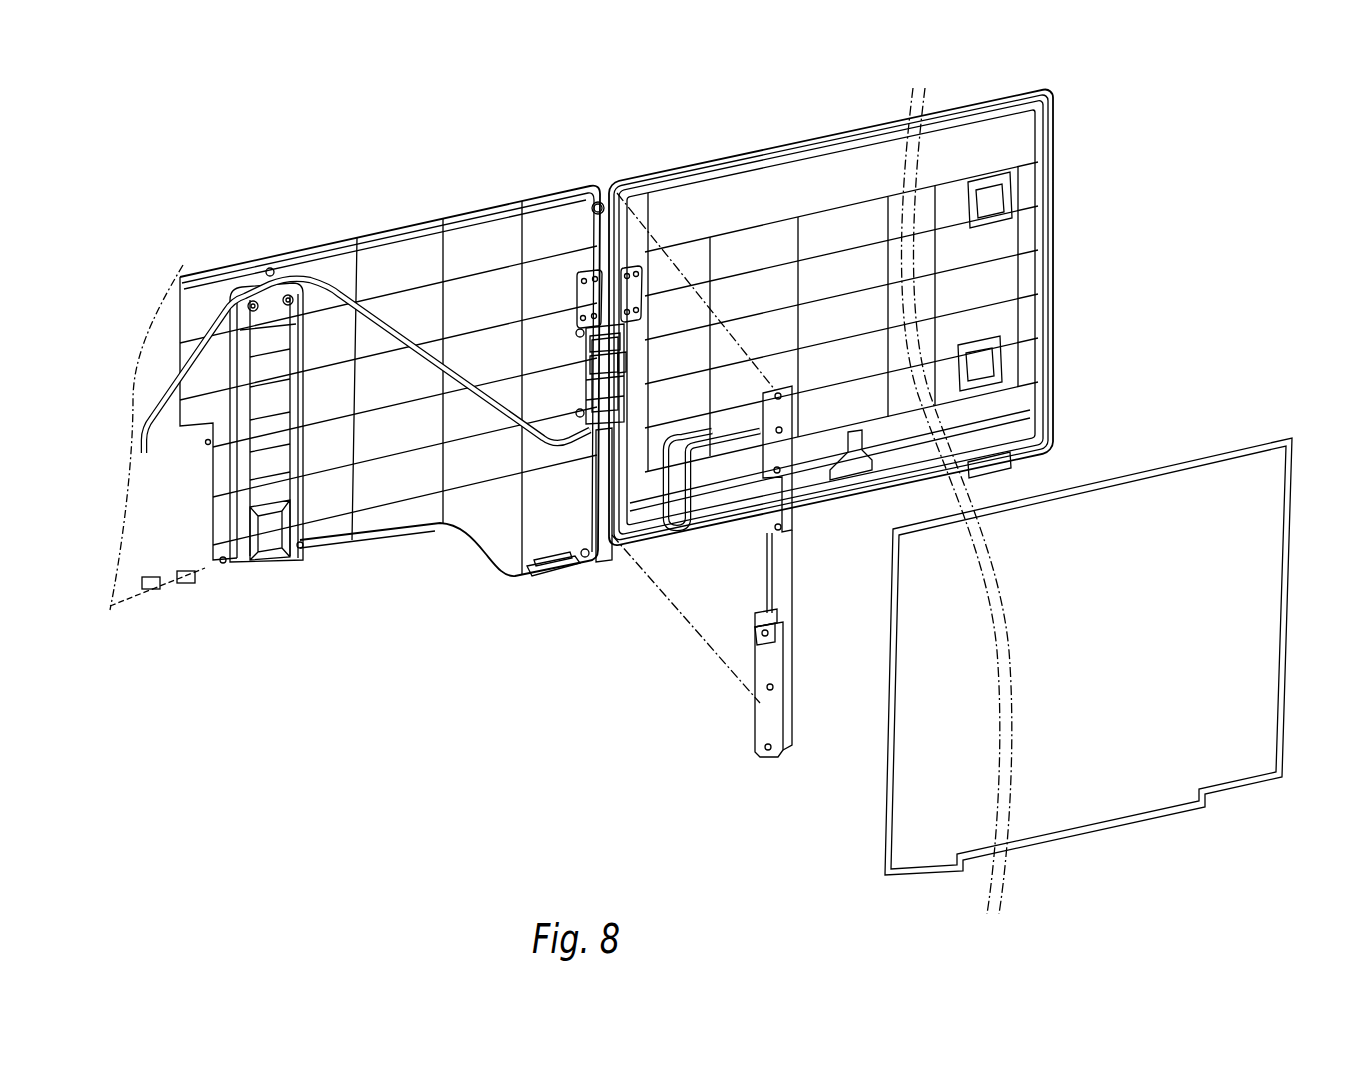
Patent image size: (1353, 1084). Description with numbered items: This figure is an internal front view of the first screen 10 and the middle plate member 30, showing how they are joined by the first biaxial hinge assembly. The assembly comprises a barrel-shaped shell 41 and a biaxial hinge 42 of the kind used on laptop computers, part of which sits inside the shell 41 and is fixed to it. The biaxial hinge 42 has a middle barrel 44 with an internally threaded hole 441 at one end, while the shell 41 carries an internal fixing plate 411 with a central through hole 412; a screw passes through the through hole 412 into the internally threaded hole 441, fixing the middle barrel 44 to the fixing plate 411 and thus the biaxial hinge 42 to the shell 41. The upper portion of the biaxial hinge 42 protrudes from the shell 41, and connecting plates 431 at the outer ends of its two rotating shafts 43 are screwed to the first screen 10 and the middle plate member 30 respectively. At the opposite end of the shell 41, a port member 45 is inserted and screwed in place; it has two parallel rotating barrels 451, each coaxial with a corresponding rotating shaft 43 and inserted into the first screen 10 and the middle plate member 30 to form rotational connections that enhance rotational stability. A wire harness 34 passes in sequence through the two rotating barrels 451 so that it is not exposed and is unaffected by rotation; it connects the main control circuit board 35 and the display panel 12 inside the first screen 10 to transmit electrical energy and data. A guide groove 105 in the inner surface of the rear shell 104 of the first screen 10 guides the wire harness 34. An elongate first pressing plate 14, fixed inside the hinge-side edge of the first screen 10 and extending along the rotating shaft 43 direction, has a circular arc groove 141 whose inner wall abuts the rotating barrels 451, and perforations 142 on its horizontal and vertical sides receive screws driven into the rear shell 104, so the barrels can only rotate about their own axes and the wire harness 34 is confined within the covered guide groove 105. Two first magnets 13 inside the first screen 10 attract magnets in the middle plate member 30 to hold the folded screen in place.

The first screen 10 is at (968, 100).
The rear shell 104 is at (838, 152).
The display panel 12 is at (1130, 480).
The first magnets 13 is at (988, 364).
The first pressing plate 14 is at (760, 700).
The circular arc groove 141 is at (752, 612).
The perforations 142 is at (757, 632).
The middle plate member 30 is at (372, 232).
The wire harness 34 is at (202, 320).
The main control circuit board 35 is at (195, 563).
The barrel-shaped shell 41 is at (588, 425).
The fixing plate 411 is at (580, 392).
The through hole 412 is at (628, 403).
The biaxial hinge 42 is at (592, 340).
The rotating shafts 43 is at (580, 310).
The connecting plates 431 is at (590, 270).
The middle barrel 44 is at (585, 363).
The internally threaded hole 441 is at (626, 357).
The port member 45 is at (583, 432).
The rotating barrels 451 is at (592, 428).
The guide groove 105 is at (612, 440).